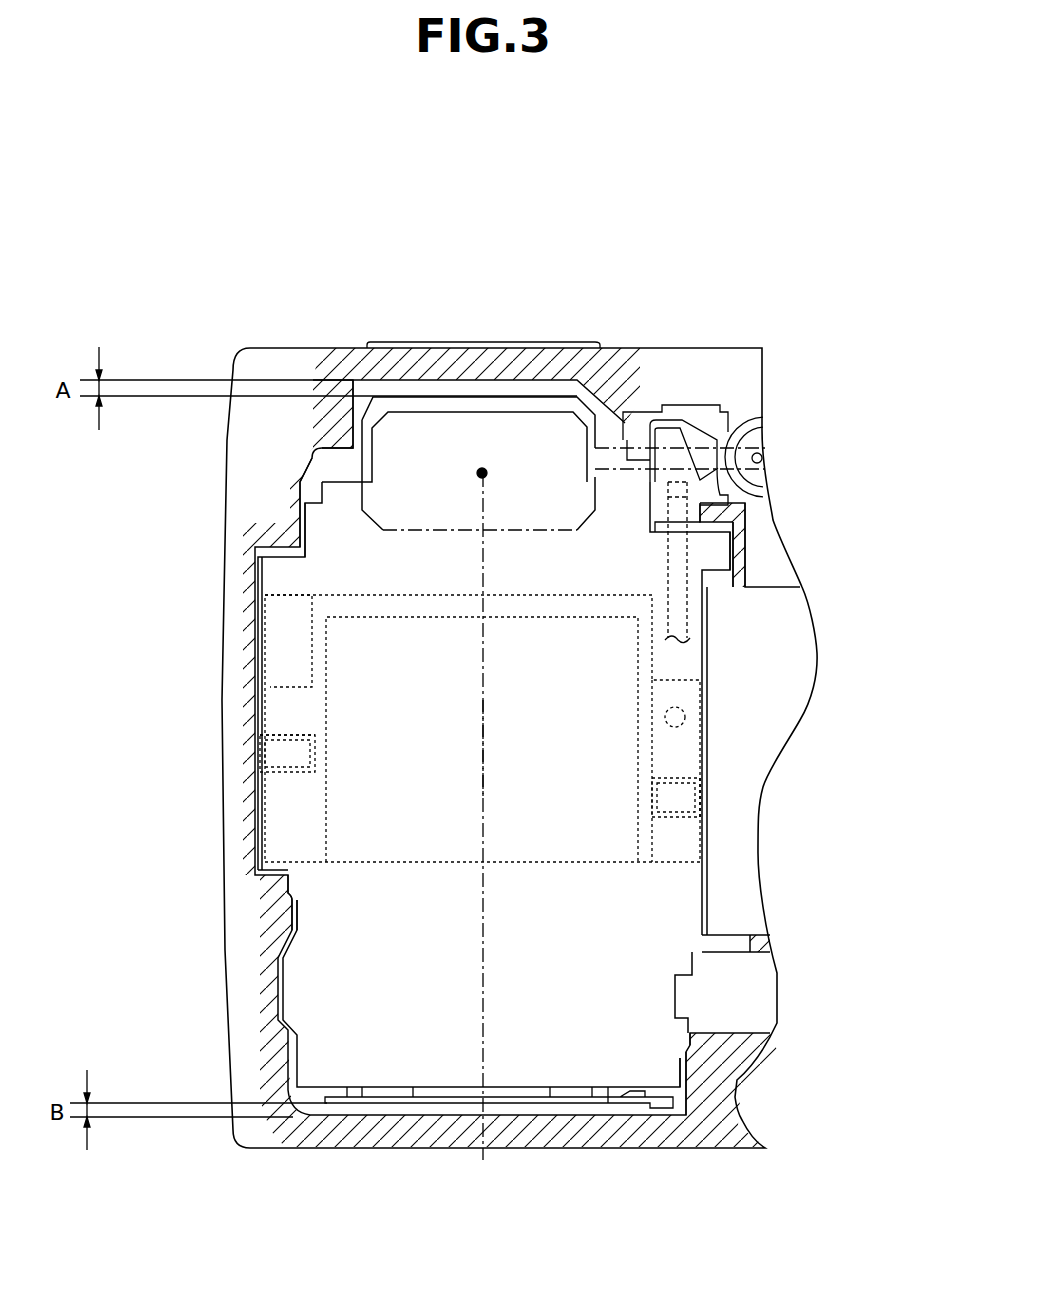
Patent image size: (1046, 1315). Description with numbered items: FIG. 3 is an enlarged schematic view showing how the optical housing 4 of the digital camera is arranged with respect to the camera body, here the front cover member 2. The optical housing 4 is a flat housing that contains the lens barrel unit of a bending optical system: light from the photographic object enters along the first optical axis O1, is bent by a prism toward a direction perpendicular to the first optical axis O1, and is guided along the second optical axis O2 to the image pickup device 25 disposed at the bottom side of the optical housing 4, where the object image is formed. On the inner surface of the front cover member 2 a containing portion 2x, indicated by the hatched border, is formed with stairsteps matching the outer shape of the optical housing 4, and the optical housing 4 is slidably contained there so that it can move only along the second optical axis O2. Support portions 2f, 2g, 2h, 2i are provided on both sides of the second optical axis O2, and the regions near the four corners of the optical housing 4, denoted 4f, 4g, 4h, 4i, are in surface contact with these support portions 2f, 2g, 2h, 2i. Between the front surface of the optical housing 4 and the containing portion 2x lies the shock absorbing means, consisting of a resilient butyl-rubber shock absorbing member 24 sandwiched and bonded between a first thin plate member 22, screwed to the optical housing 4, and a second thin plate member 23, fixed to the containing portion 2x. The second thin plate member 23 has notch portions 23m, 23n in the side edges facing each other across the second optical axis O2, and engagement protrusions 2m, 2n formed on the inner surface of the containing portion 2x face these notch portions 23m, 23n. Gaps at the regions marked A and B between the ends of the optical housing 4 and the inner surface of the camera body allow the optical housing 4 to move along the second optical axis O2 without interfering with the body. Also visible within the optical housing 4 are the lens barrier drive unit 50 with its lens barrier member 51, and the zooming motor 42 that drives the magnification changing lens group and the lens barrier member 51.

The front cover member 2 is at (347, 355).
The containing portion 2x is at (333, 467).
The support portion 2f is at (296, 520).
The support portion 2g is at (284, 918).
The support portion 2h is at (744, 550).
The support portion 2i is at (692, 1076).
The engagement protrusion 2m is at (285, 753).
The engagement protrusion 2n is at (685, 797).
The optical housing 4 is at (296, 581).
The corner region of optical housing 4f is at (308, 521).
The corner region of optical housing 4g is at (301, 918).
The corner region of optical housing 4h is at (725, 550).
The corner region of optical housing 4i is at (673, 1067).
The first thin plate member 22 is at (283, 634).
The second thin plate member 23 is at (680, 693).
The notch portion 23m is at (252, 733).
The notch portion 23n is at (706, 781).
The shock absorbing member 24 is at (352, 818).
The image pickup device 25 is at (522, 1093).
The zooming motor 42 is at (762, 993).
The lens barrier drive unit 50 is at (730, 394).
The lens barrier member 51 is at (583, 412).
The first optical axis O1 is at (488, 472).
The second optical axis O2 is at (484, 768).